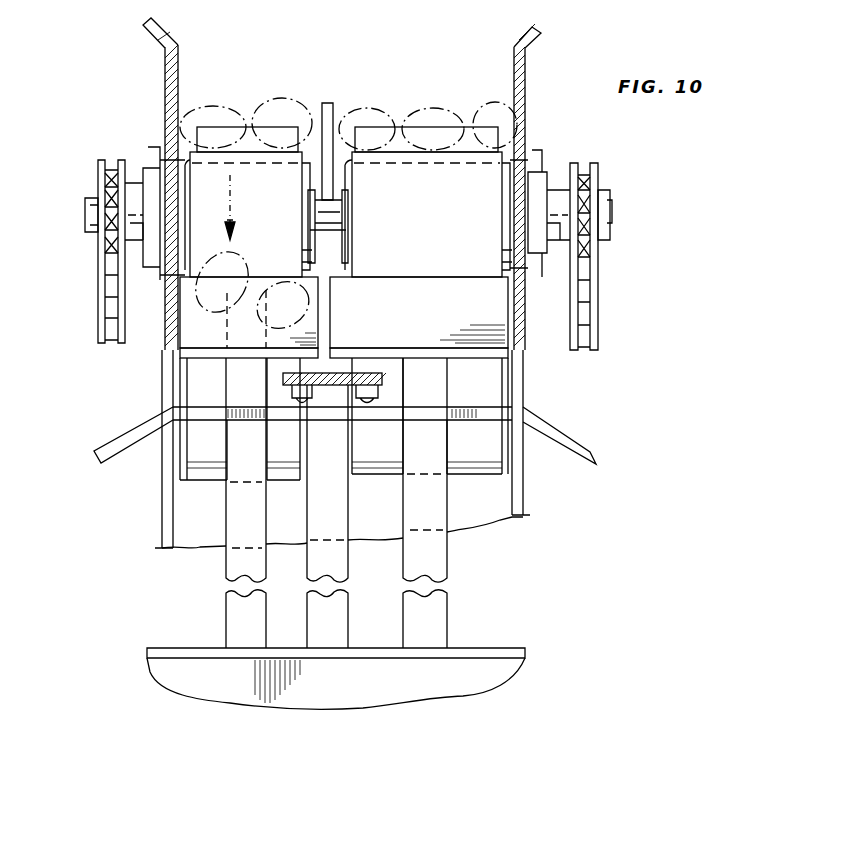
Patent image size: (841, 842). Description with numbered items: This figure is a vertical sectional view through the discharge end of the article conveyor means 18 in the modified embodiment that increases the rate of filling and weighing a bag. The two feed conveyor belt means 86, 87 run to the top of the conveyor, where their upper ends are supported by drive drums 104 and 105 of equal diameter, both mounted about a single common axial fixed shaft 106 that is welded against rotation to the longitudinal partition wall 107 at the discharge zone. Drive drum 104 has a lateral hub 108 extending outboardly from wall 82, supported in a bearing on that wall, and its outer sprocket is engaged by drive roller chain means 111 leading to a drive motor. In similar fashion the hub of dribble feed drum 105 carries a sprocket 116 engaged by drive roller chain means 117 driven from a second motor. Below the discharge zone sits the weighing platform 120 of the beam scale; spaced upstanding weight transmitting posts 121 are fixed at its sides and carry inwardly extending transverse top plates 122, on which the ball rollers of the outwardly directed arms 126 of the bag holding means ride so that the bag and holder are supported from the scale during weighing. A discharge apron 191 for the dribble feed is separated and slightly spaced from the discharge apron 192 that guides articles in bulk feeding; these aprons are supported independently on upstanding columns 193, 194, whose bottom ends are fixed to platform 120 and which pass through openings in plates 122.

The article conveyor means 18 is at (132, 107).
The wall 82 is at (526, 73).
The feed conveyor belt means 86 is at (441, 153).
The feed conveyor belt means 87 is at (260, 150).
The drive drum 104 is at (508, 172).
The drive drum 105 is at (192, 152).
The axial fixed shaft 106 is at (330, 222).
The longitudinal partition wall 107 is at (333, 103).
The lateral hub 108 is at (557, 197).
The drive roller chain means 111 is at (598, 310).
The sprocket 116 is at (98, 185).
The drive roller chain means 117 is at (98, 297).
The weighing platform 120 is at (482, 652).
The weight transmitting posts 121 is at (330, 553).
The transverse top plates 122 is at (483, 408).
The arms 126 is at (372, 370).
The discharge apron 191 is at (192, 332).
The discharge apron 192 is at (483, 332).
The upstanding column 193 is at (238, 517).
The upstanding column 194 is at (435, 552).